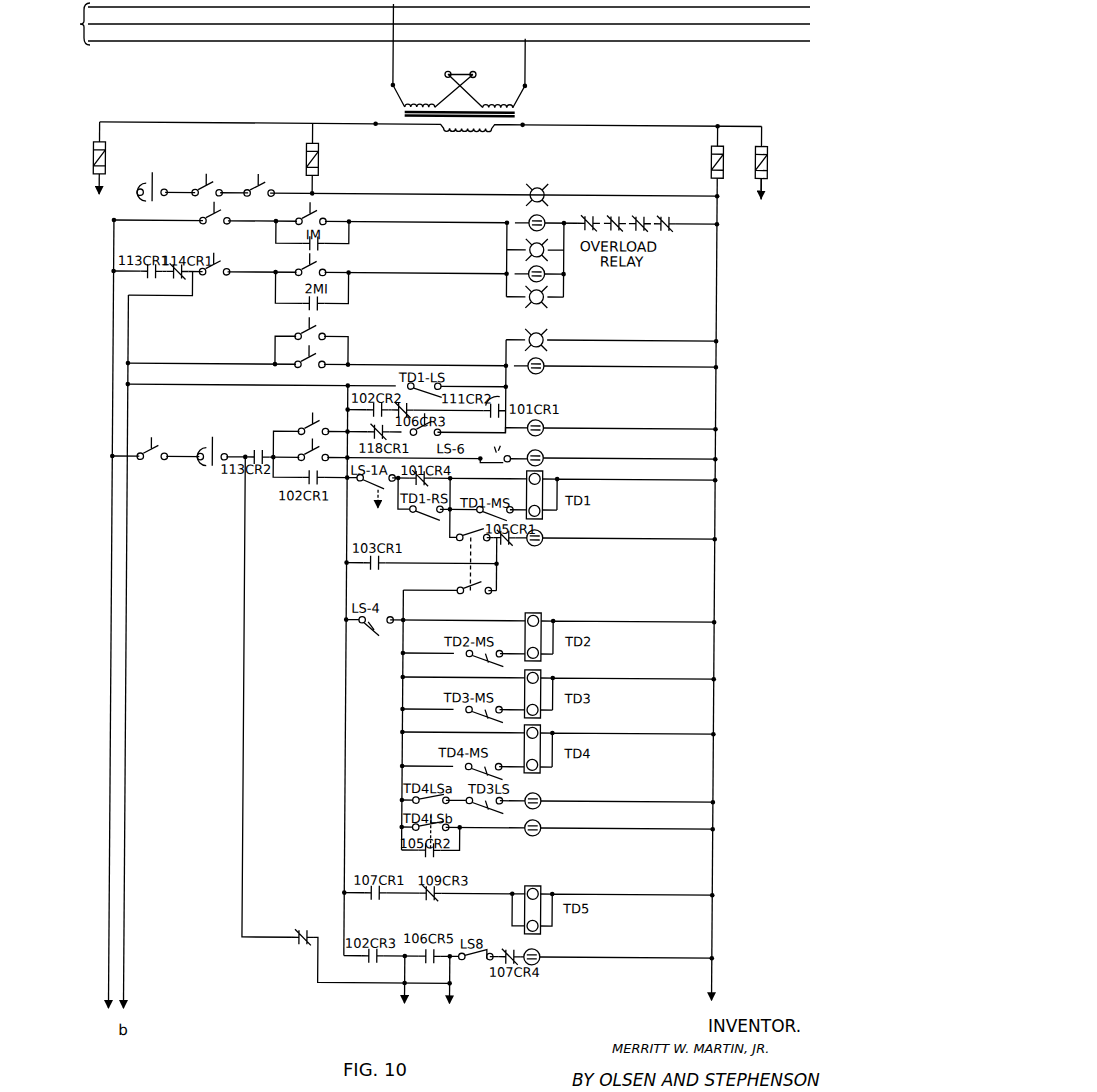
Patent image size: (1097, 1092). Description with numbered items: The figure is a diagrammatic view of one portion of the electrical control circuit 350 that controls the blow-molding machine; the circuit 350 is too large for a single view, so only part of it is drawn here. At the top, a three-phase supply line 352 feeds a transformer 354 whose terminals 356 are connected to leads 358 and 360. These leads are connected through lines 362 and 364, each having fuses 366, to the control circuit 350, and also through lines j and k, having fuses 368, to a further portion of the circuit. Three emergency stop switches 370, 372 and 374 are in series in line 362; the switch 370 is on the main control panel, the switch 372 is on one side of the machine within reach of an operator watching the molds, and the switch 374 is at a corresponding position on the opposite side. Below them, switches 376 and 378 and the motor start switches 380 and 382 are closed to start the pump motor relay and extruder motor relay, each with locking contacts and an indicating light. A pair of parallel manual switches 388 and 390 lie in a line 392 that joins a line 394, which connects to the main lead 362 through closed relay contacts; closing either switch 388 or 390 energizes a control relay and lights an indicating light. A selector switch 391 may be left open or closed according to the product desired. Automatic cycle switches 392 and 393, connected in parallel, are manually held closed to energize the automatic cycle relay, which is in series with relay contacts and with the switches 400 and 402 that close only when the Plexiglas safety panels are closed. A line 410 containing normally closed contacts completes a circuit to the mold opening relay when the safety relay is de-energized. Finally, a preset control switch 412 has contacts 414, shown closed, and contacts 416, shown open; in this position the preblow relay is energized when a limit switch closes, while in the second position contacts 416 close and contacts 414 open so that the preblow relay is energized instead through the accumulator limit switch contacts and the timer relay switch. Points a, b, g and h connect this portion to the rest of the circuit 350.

The control circuit 350 is at (752, 527).
The three-phase supply line 352 is at (427, 24).
The transformer 354 is at (528, 77).
The terminals 356 is at (379, 126).
The lead 358 is at (259, 124).
The lead 360 is at (605, 124).
The line 362 is at (318, 193).
The line 364 is at (712, 187).
The fuses 366 is at (320, 168).
The fuses 368 is at (102, 166).
The emergency stop switch 370 is at (147, 191).
The emergency stop switch 372 is at (201, 190).
The emergency stop switch 374 is at (251, 190).
The switch 376 is at (219, 224).
The switch 378 is at (221, 275).
The motor start switch 380 is at (317, 222).
The motor start switch 382 is at (318, 275).
The manual switch 388 is at (317, 335).
The manual switch 390 is at (317, 362).
The selector switch 391 is at (500, 460).
The line 392 is at (200, 364).
The automatic cycle switch 393 is at (307, 446).
The line 394 is at (129, 410).
The safety panel switch 400 is at (164, 452).
The safety panel switch 402 is at (210, 456).
The line 410 is at (246, 800).
The preset control switch 412 is at (462, 542).
The switch contacts 414 is at (451, 580).
The switch contacts 416 is at (471, 526).